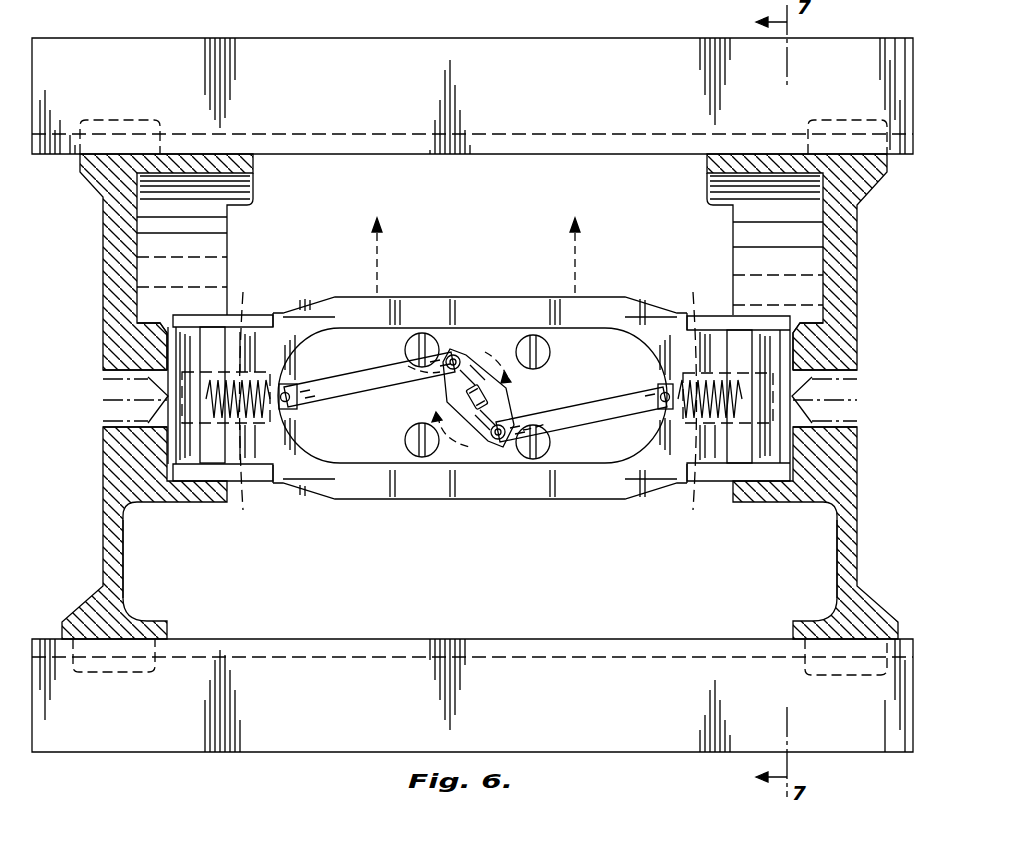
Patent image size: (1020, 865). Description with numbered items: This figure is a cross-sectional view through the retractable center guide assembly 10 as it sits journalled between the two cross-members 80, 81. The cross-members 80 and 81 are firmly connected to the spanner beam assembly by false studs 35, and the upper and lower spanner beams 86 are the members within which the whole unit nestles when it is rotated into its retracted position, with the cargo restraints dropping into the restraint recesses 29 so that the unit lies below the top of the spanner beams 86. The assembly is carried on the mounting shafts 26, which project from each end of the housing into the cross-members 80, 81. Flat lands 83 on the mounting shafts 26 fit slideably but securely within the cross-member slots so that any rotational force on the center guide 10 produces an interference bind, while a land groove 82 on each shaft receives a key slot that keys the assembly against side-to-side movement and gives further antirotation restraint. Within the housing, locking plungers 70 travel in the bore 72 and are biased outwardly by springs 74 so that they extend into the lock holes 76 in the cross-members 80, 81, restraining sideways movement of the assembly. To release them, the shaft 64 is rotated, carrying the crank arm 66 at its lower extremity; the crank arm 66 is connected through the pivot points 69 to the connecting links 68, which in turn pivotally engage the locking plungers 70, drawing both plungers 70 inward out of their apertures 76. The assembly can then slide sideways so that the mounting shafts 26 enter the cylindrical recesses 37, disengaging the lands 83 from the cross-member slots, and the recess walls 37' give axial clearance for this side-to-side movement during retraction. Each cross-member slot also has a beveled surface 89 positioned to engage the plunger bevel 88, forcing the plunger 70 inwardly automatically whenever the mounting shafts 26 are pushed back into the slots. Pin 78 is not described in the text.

The retractable center guide assembly 10 is at (399, 505).
The mounting shaft 26 is at (188, 483).
The restraint recess 29 is at (130, 575).
The false stud 35 is at (110, 128).
The cylindrical recess 37 is at (476, 244).
The recess wall 37' is at (475, 269).
The shaft 64 is at (480, 387).
The crank arm 66 is at (500, 397).
The connecting link 68 is at (353, 390).
The pivot point 69 is at (455, 352).
The locking plunger 70 is at (157, 402).
The bore 72 is at (212, 314).
The spring 74 is at (250, 313).
The lock hole 76 is at (115, 382).
The pin 78 is at (289, 381).
The cross-member 80 is at (850, 303).
The cross-member 81 is at (110, 293).
The land groove 82 is at (218, 445).
The flat land 83 is at (185, 445).
The spanner beam 86 is at (513, 57).
The plunger bevel 88 is at (186, 448).
The beveled surface 89 is at (160, 330).